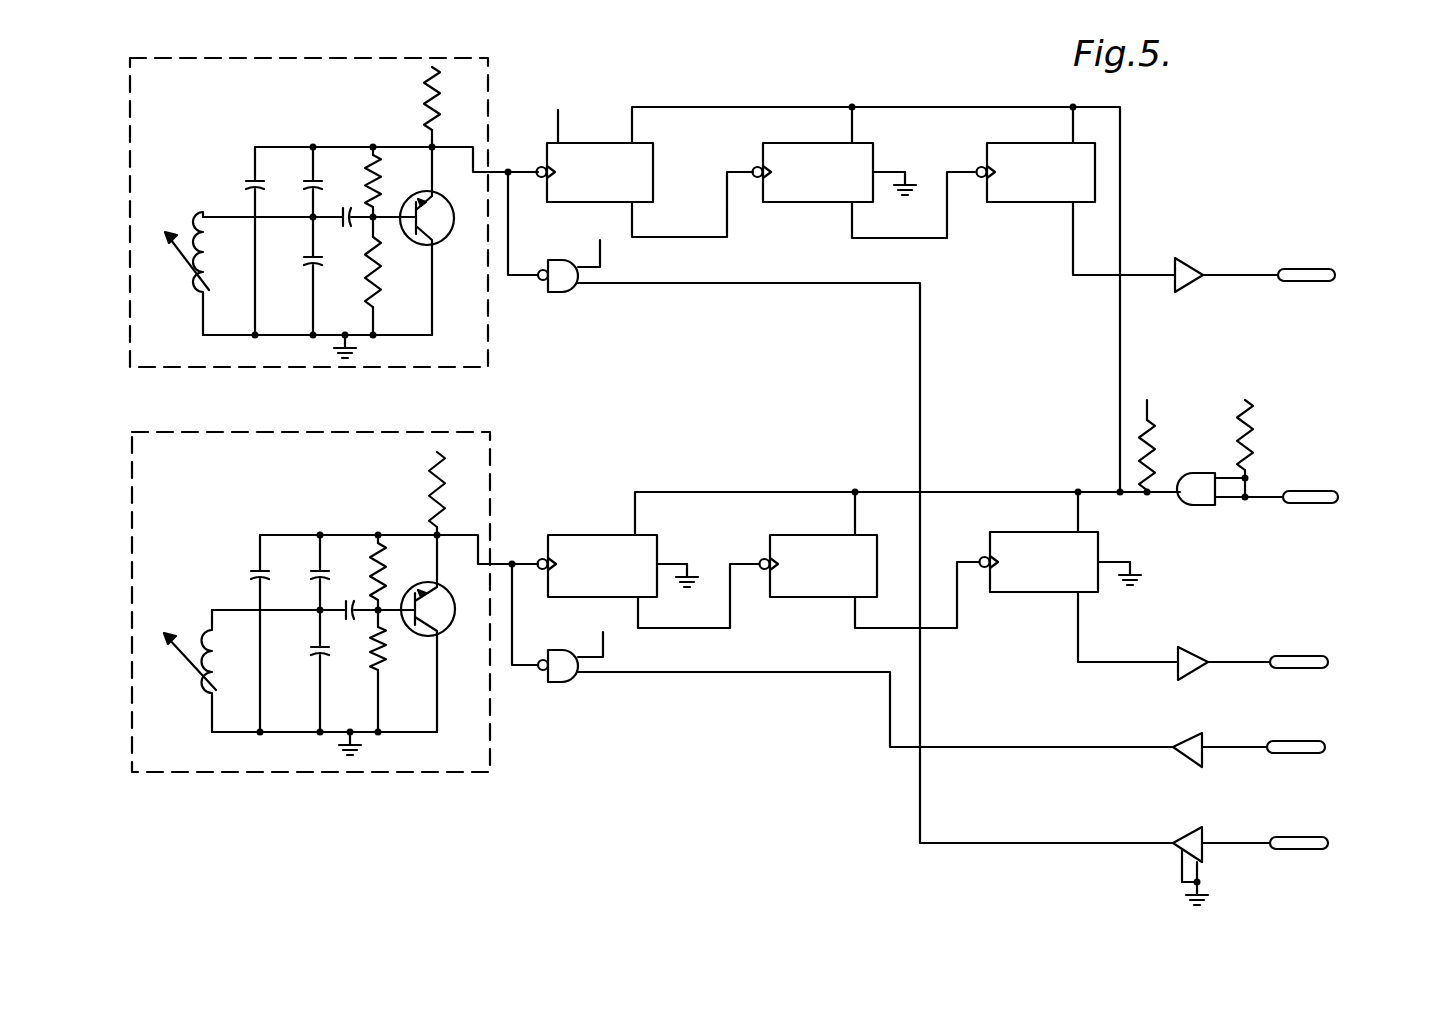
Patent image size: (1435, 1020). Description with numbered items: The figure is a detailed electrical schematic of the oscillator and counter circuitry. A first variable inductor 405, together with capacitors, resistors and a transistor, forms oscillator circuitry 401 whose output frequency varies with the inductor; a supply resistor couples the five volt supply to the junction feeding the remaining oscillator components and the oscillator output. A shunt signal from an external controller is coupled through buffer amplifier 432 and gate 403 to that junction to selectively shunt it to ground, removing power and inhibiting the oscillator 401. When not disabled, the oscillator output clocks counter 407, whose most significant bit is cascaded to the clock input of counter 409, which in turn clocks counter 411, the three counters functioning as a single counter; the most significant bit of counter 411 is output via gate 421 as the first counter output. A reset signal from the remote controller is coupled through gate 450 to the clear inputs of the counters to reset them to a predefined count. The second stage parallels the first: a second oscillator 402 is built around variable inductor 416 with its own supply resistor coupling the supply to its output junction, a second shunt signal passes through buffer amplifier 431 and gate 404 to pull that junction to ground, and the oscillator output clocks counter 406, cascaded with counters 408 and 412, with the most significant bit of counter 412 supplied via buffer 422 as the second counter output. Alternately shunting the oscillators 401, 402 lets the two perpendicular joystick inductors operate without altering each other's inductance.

The oscillator circuitry 401 is at (228, 106).
The second oscillator 402 is at (219, 468).
The gate 403 is at (565, 292).
The gate 404 is at (581, 684).
The first variable inductor 405 is at (202, 222).
The counter 406 is at (597, 502).
The counter 407 is at (647, 140).
The counter 408 is at (800, 510).
The counter 409 is at (784, 136).
The counter 411 is at (1034, 202).
The counter 412 is at (1016, 509).
The variable inductor 416 is at (200, 629).
The gate 421 is at (1187, 282).
The buffer 422 is at (1184, 645).
The buffer amplifier 431 is at (1175, 740).
The buffer amplifier 432 is at (1183, 832).
The gate 450 is at (1195, 505).